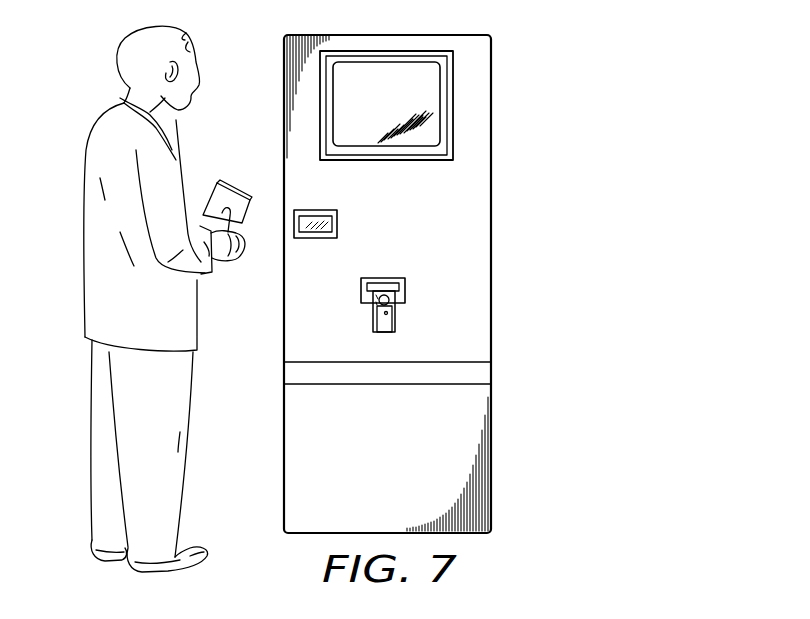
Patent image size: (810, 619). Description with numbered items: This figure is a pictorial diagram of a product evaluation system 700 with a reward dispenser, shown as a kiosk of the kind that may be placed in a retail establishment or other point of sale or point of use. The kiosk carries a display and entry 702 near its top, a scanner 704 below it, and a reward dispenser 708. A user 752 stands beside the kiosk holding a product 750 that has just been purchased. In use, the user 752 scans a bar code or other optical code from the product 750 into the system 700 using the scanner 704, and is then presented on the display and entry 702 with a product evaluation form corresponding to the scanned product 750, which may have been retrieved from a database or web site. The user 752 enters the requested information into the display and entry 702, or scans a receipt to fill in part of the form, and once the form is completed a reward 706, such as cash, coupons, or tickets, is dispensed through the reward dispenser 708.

The product evaluation system 700 is at (616, 211).
The display and entry 702 is at (455, 137).
The scanner 704 is at (337, 223).
The reward 706 is at (373, 318).
The reward dispenser 708 is at (405, 291).
The product 750 is at (232, 182).
The user 752 is at (84, 157).